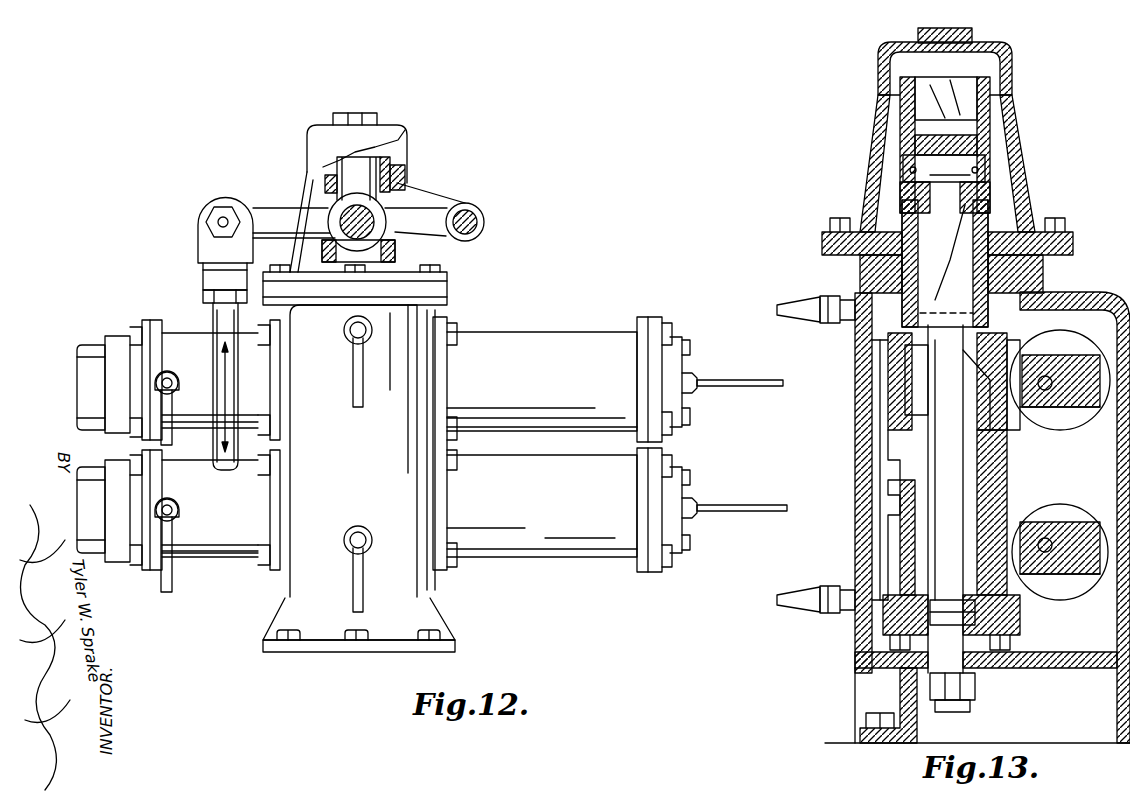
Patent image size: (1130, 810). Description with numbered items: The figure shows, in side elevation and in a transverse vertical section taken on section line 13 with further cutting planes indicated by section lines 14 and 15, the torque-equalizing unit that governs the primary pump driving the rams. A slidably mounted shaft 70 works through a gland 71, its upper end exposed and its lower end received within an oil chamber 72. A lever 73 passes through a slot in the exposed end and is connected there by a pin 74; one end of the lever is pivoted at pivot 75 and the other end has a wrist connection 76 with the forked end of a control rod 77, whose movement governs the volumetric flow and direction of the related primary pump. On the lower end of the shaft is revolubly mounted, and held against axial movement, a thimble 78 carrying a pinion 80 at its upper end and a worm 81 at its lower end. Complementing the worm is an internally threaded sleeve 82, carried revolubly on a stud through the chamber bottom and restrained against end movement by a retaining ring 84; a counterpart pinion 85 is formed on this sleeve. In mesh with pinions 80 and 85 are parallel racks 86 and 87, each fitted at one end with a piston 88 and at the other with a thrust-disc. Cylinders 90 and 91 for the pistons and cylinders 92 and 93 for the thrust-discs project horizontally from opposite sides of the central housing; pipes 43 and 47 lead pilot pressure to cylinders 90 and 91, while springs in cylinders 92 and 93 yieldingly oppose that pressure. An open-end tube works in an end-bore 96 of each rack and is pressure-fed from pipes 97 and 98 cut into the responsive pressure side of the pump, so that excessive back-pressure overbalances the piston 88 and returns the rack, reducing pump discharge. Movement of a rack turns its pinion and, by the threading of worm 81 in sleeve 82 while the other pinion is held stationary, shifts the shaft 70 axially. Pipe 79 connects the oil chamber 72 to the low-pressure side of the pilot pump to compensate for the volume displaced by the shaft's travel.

In FIG. 12, the section line 13— 13 is at (354, 118).
In FIG. 12, the section line 14— 14 is at (97, 385).
In FIG. 12, the section line 15— 15 is at (198, 222).
In FIG. 12, the pipe 43 is at (172, 440).
In FIG. 12, the pipe 47 is at (174, 580).
In FIG. 12, the shaft 70 is at (334, 173).
In FIG. 13, the shaft 70 is at (990, 312).
In FIG. 13, the gland 71 is at (1003, 212).
In FIG. 13, the oil chamber 72 is at (870, 452).
In FIG. 12, the lever 73 is at (286, 217).
In FIG. 13, the lever 73 is at (962, 146).
In FIG. 12, the pin 74 is at (358, 205).
In FIG. 13, the pin 74 is at (978, 167).
In FIG. 12, the pivot 75 is at (466, 208).
In FIG. 12, the wrist connection 76 is at (228, 210).
In FIG. 12, the control rod 77 is at (216, 366).
In FIG. 13, the thimble 78 is at (890, 346).
In FIG. 12, the pipe 79 is at (352, 376).
In FIG. 13, the pipe 79 is at (782, 306).
In FIG. 13, the pinion 80 is at (1010, 433).
In FIG. 13, the worm 81 is at (890, 462).
In FIG. 13, the internally threaded sleeve 82 is at (1020, 613).
In FIG. 13, the retaining ring 84 is at (1020, 630).
In FIG. 13, the pinion 85 is at (885, 550).
In FIG. 13, the rack 86 is at (1078, 356).
In FIG. 13, the rack 87 is at (1085, 518).
In FIG. 13, the piston 88 is at (950, 612).
In FIG. 12, the cylinder 90 is at (199, 332).
In FIG. 12, the cylinder 91 is at (244, 565).
In FIG. 12, the cylinder 92 is at (570, 333).
In FIG. 13, the cylinder 92 is at (1075, 425).
In FIG. 12, the cylinder 93 is at (575, 562).
In FIG. 13, the cylinder 93 is at (1078, 586).
In FIG. 13, the end-bore 96 is at (1048, 375).
In FIG. 12, the pipe 97 is at (748, 379).
In FIG. 12, the pipe 98 is at (761, 505).